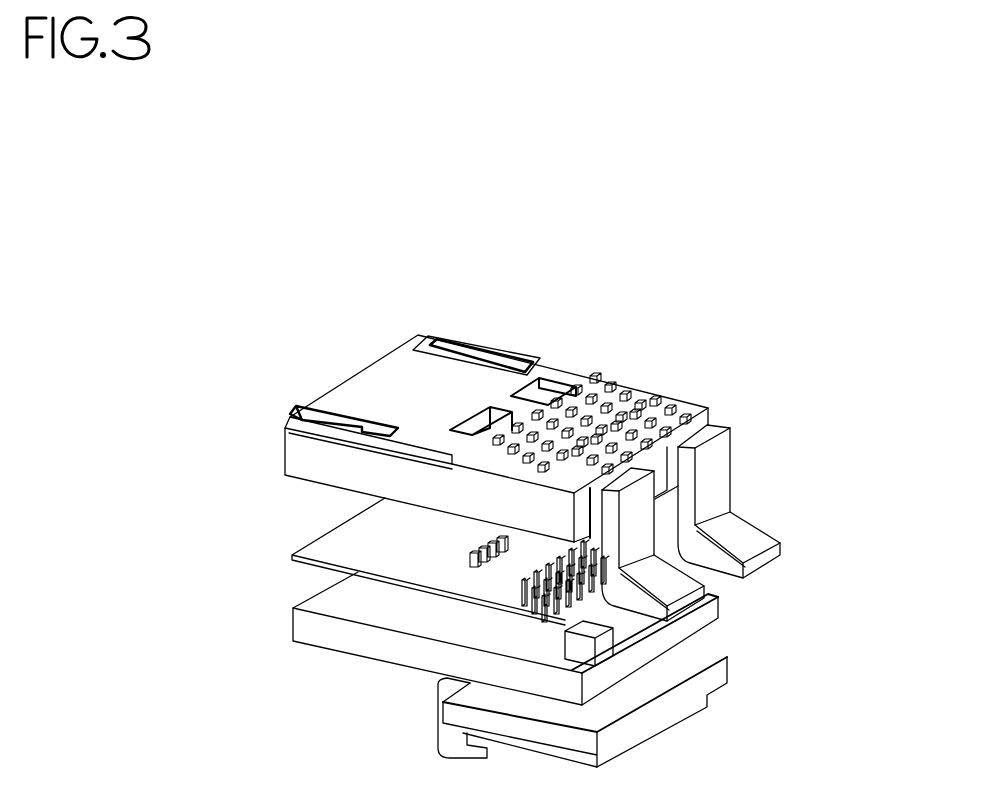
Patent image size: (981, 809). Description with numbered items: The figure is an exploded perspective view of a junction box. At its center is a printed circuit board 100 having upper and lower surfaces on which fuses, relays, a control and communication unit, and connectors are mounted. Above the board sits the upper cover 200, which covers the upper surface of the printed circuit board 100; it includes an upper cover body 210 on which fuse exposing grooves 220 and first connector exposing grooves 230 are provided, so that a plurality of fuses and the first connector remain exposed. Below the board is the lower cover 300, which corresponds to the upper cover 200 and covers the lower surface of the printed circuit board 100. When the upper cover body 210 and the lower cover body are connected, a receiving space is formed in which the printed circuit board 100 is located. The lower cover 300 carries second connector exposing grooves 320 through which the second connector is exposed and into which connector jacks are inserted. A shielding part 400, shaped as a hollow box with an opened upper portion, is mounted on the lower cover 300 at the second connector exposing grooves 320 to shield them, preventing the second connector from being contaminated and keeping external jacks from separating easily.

The printed circuit board 100 is at (312, 552).
The upper cover 200 is at (287, 447).
The upper cover body 210 is at (680, 405).
The fuse exposing grooves 220 is at (620, 390).
The first connector exposing grooves 230 is at (458, 352).
The lower cover 300 is at (293, 615).
The second connector exposing grooves 320 is at (690, 673).
The shielding part 400 is at (437, 734).